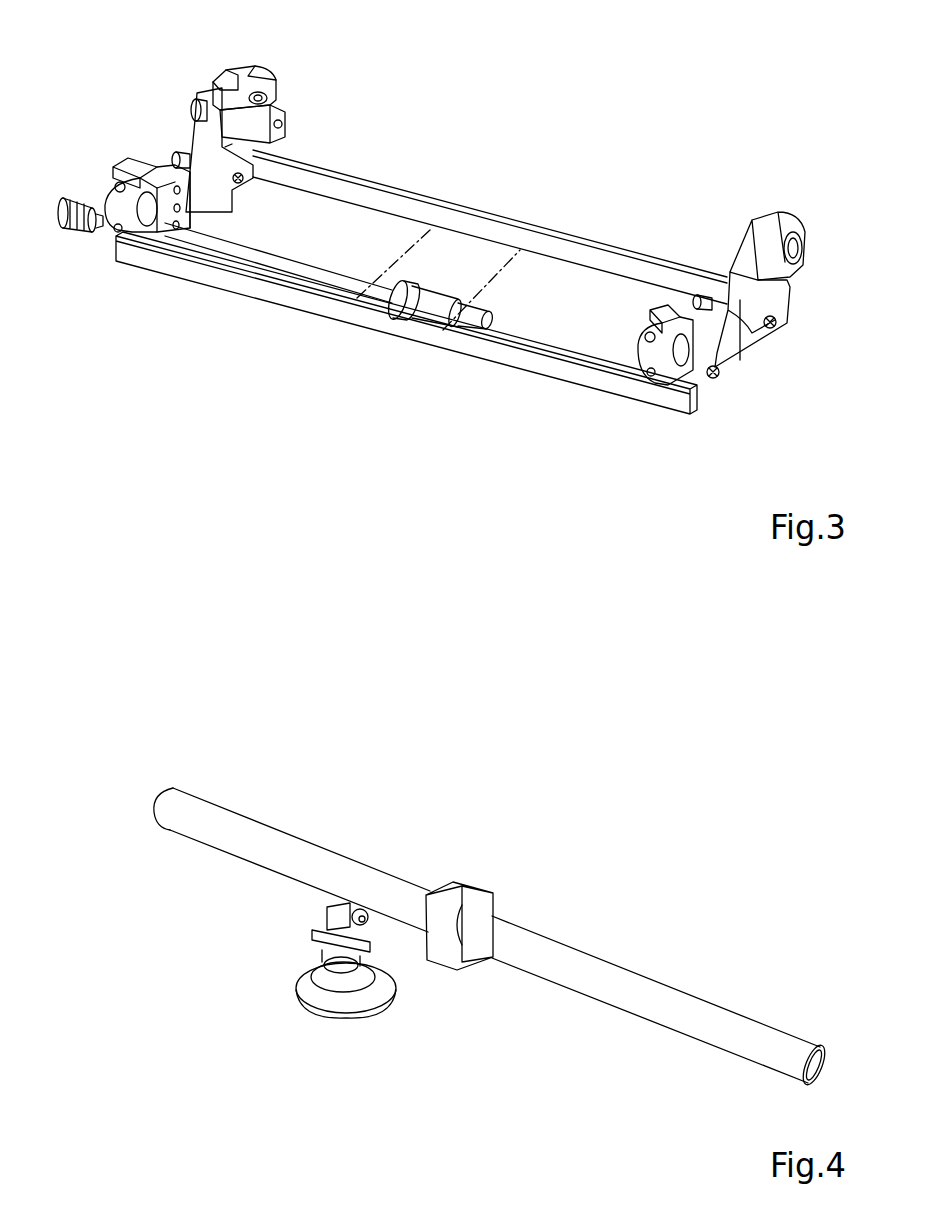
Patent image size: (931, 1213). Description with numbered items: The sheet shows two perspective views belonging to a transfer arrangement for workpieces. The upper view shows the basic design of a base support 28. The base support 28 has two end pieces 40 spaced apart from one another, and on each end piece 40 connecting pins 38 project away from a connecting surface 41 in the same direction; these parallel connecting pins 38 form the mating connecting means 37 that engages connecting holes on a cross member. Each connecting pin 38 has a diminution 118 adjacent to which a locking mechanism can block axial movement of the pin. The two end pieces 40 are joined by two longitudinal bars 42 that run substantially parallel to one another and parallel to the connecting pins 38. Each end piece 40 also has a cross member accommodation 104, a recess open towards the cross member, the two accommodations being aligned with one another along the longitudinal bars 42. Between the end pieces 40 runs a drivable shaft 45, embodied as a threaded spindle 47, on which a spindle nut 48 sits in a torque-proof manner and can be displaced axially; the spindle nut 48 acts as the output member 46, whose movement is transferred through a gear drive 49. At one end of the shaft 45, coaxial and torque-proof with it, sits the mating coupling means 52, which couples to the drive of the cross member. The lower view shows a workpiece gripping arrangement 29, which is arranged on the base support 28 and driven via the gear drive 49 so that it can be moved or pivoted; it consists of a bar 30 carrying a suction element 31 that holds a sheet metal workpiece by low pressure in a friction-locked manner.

In FIG. 3, the base support 28 is at (603, 105).
In FIG. 4, the workpiece gripping arrangement 29 is at (138, 786).
In FIG. 4, the bar 30 is at (592, 963).
In FIG. 4, the suction element 31 is at (313, 988).
In FIG. 3, the mating connecting means 37 is at (105, 75).
In FIG. 3, the connecting pin 38 is at (160, 157).
In FIG. 3, the end piece 40 is at (253, 72).
In FIG. 3, the connecting surface 41 is at (200, 90).
In FIG. 3, the longitudinal bar 42 is at (548, 230).
In FIG. 3, the drivable shaft 45 is at (248, 258).
In FIG. 3, the output member 46 is at (390, 307).
In FIG. 3, the threaded spindle 47 is at (467, 322).
In FIG. 3, the spindle nut 48 is at (422, 307).
In FIG. 3, the gear drive 49 is at (393, 260).
In FIG. 3, the mating coupling means 52 is at (63, 223).
In FIG. 3, the cross member accommodation 104 is at (193, 193).
In FIG. 3, the diminution 118 is at (177, 152).